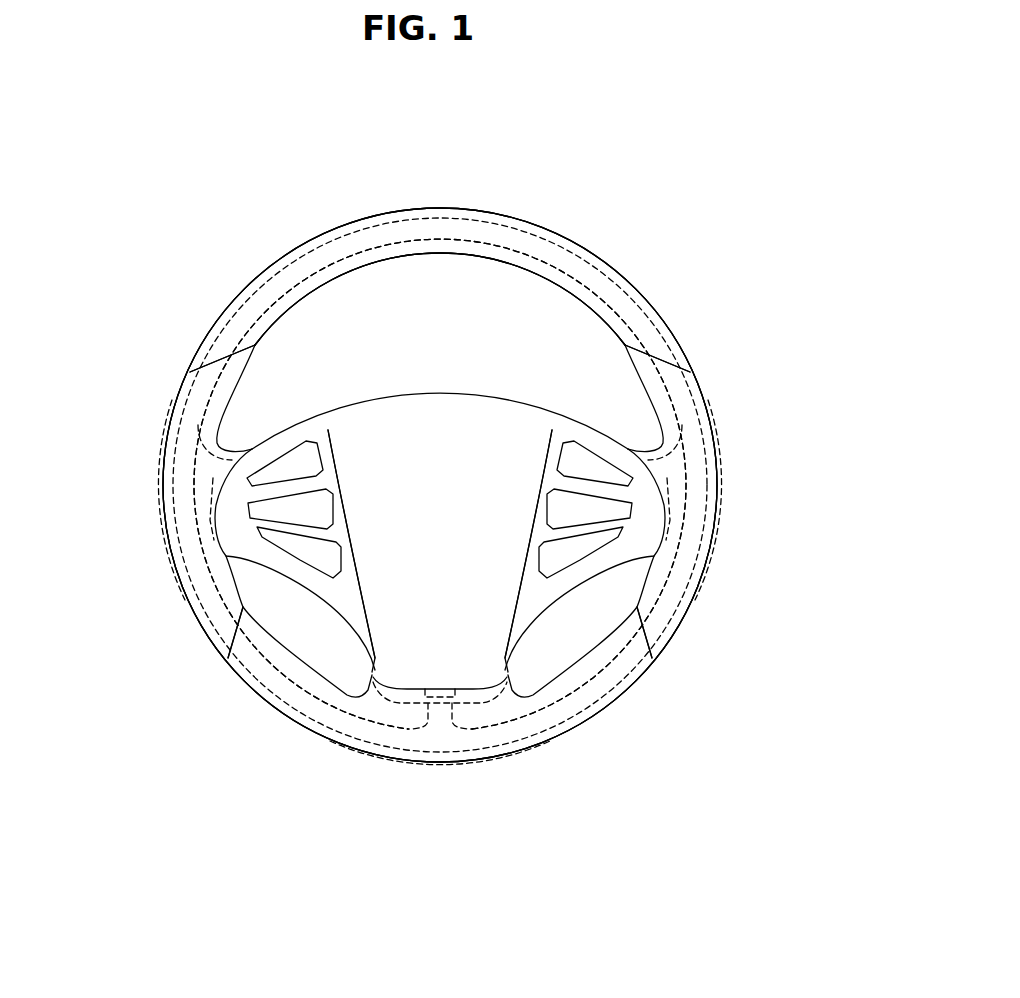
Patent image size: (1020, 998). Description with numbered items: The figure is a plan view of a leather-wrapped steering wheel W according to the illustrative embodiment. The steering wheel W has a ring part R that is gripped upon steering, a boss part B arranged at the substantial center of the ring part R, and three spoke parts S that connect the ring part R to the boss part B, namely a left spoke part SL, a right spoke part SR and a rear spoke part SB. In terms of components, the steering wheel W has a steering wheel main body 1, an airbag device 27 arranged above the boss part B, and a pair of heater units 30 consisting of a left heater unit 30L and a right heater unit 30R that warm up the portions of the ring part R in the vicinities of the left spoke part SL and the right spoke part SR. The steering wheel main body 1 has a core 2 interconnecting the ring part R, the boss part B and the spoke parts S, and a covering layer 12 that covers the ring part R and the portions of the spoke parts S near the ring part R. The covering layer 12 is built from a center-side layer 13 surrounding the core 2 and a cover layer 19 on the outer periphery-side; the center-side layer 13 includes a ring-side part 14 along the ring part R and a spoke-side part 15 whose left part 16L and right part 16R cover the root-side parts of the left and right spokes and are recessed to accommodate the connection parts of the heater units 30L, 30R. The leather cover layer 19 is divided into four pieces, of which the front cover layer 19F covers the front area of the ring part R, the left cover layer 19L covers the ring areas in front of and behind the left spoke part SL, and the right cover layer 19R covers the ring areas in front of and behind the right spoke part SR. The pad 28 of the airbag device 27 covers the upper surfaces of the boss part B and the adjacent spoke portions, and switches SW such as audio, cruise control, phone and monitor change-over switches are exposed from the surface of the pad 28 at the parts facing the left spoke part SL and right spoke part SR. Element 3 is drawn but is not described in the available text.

The steering wheel W is at (660, 160).
The steering wheel main body 1 is at (557, 220).
The ring part R is at (498, 205).
The covering layer 12 is at (668, 308).
The core 2 is at (370, 217).
The inner cover layer 3 is at (427, 220).
The center-side layer 13 is at (441, 459).
The ring-side part 14 is at (588, 270).
The spoke-side part 15 is at (441, 479).
The left part 16L is at (205, 500).
The right part 16R is at (660, 477).
The cover layer 19 is at (439, 499).
The front cover layer 19F is at (290, 272).
The left cover layer 19L is at (182, 448).
The right cover layer 19R is at (685, 403).
The airbag device 27 is at (428, 388).
The pad 28 is at (397, 427).
The boss part B is at (500, 390).
The spoke parts S is at (440, 565).
The left spoke part SL is at (255, 433).
The right spoke part SR is at (610, 430).
The rear spoke part SB is at (517, 675).
The switches SW is at (300, 558).
The heater units 30 is at (451, 628).
The left heater unit 30L is at (197, 578).
The right heater unit 30R is at (688, 560).